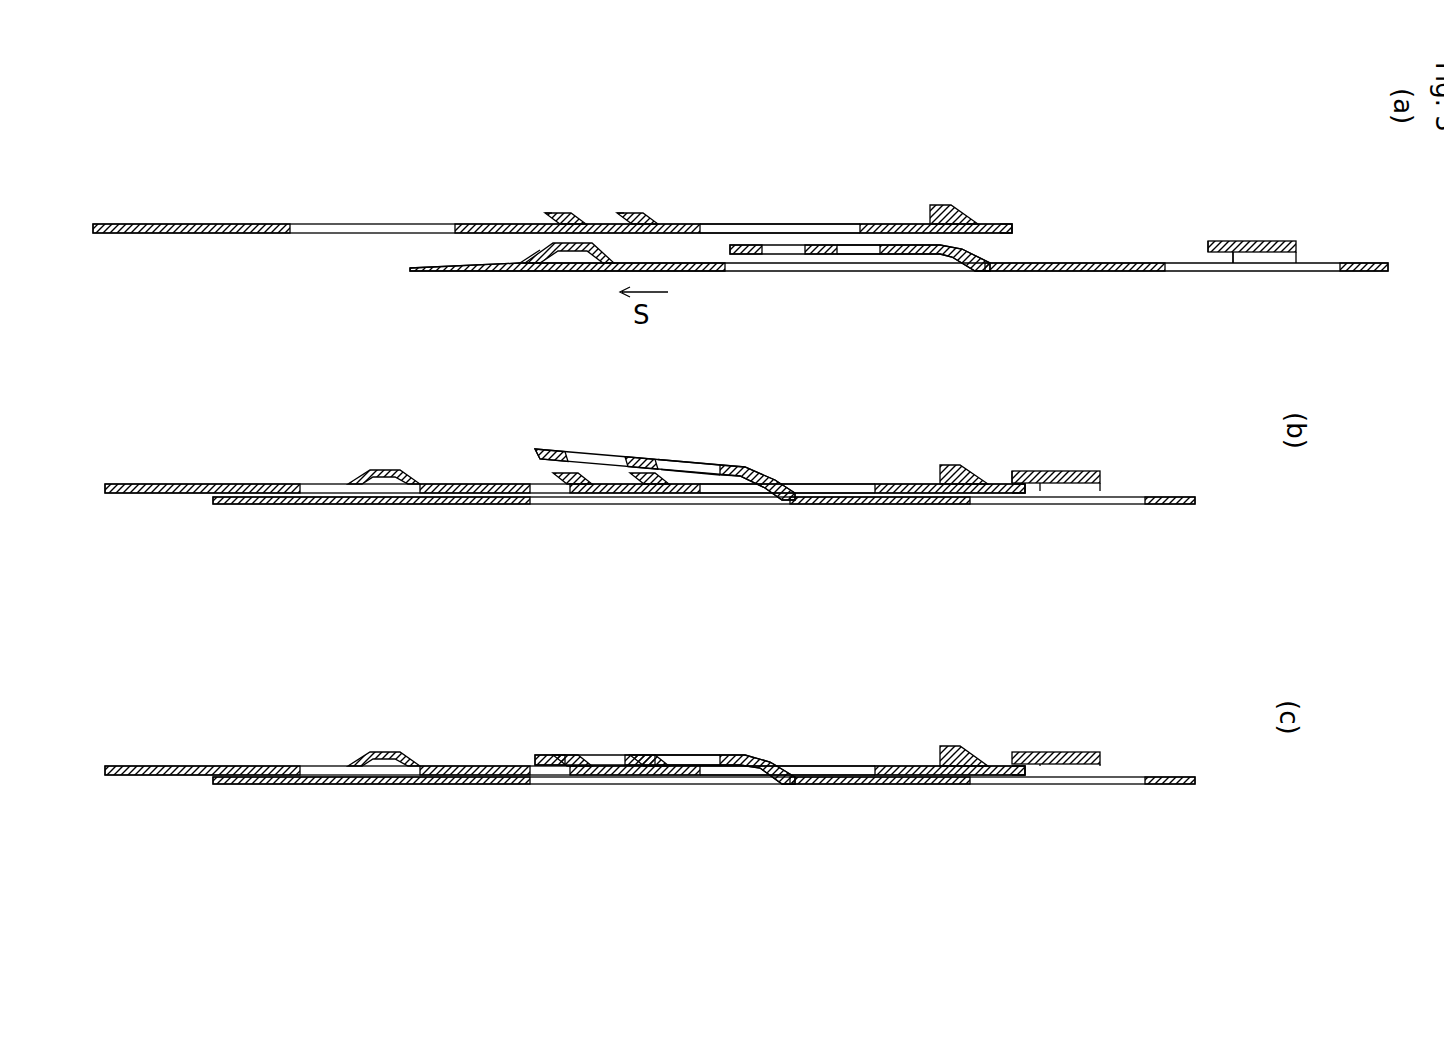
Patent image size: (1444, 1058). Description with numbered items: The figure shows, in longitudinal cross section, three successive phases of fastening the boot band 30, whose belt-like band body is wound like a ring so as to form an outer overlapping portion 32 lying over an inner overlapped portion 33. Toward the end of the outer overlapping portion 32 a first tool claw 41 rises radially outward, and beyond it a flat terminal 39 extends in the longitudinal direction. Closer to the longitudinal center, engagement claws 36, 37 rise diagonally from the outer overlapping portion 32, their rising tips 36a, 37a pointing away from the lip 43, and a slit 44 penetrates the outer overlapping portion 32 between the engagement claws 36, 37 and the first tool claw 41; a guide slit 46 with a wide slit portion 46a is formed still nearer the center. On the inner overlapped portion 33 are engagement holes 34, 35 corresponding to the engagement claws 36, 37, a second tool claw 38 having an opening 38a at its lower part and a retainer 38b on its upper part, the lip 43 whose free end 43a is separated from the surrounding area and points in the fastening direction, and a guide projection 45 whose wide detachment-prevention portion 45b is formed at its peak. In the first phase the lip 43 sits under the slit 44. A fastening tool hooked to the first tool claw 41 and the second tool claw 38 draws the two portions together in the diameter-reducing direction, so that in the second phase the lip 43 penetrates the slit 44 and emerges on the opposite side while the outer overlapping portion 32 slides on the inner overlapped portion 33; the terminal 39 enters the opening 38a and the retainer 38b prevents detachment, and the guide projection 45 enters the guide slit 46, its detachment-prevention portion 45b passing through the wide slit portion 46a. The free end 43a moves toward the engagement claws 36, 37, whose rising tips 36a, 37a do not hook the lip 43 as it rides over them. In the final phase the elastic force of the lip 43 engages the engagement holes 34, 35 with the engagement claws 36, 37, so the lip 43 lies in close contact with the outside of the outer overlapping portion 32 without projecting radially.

The boot band 30 is at (1072, 190).
The outer overlapping portion 32 is at (698, 215).
The inner overlapped portion 33 is at (710, 290).
The engagement hole 34 is at (862, 257).
The engagement hole 35 is at (795, 256).
The engagement claw 36 is at (645, 212).
The rising tip 36a is at (616, 213).
The engagement claw 37 is at (560, 212).
The rising tip 37a is at (543, 213).
The second tool claw 38 is at (1282, 240).
The opening 38a is at (1235, 264).
The retainer 38b is at (1213, 240).
The terminal 39 is at (1008, 222).
The first tool claw 41 is at (940, 205).
The lip 43 is at (890, 244).
The free end 43a is at (738, 256).
The slit 44 is at (772, 223).
The guide projection 45 is at (388, 470).
The detachment-prevention portion 45b is at (570, 272).
The guide slit 46 is at (332, 224).
The wide slit portion 46a is at (528, 272).